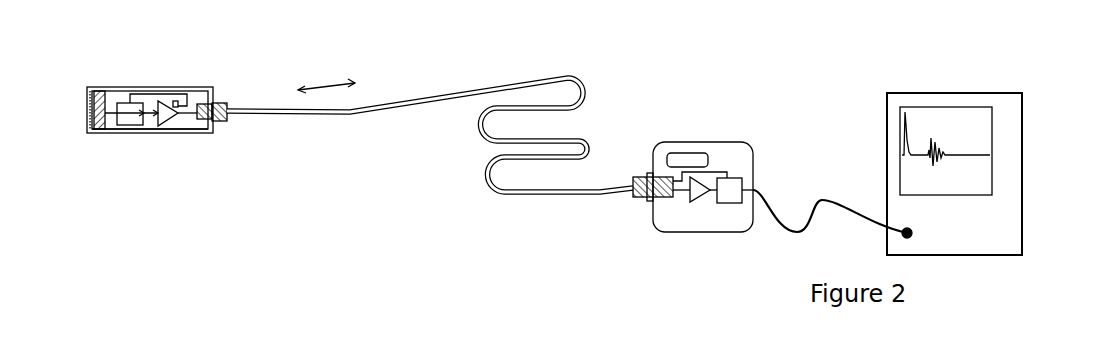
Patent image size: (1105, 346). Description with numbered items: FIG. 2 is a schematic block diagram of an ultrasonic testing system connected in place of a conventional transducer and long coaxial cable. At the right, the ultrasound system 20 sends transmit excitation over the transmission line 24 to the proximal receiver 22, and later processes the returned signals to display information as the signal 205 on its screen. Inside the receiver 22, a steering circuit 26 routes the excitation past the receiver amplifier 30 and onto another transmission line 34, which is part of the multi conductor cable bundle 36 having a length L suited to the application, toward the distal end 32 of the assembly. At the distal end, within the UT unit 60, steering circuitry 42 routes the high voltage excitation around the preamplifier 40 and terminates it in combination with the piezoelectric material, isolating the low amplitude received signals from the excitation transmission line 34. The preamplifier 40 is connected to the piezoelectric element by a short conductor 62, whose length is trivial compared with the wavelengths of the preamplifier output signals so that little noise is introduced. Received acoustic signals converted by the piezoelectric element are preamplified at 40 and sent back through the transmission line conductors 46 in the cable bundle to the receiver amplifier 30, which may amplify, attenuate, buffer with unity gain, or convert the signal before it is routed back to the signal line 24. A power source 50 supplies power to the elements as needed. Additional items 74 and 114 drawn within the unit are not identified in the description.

The ultrasound system 20 is at (1013, 78).
The proximal receiver 22 is at (657, 228).
The transmission line 24 is at (783, 200).
The steering circuit 26 is at (738, 175).
The receiver amplifier 30 is at (702, 201).
The distal end 32 is at (239, 90).
The transmission line 34 is at (449, 93).
The multi conductor cable bundle 36 is at (582, 78).
The preamplifier 40 is at (172, 127).
The steering circuitry 42 is at (130, 129).
The transmission line conductors 46 is at (390, 109).
The power source 50 is at (678, 150).
The UT unit 60 is at (163, 78).
The conductor 62 is at (148, 125).
The component 74 is at (177, 100).
The transducer element 114 is at (107, 101).
The signal 205 is at (943, 133).
The length L is at (337, 83).